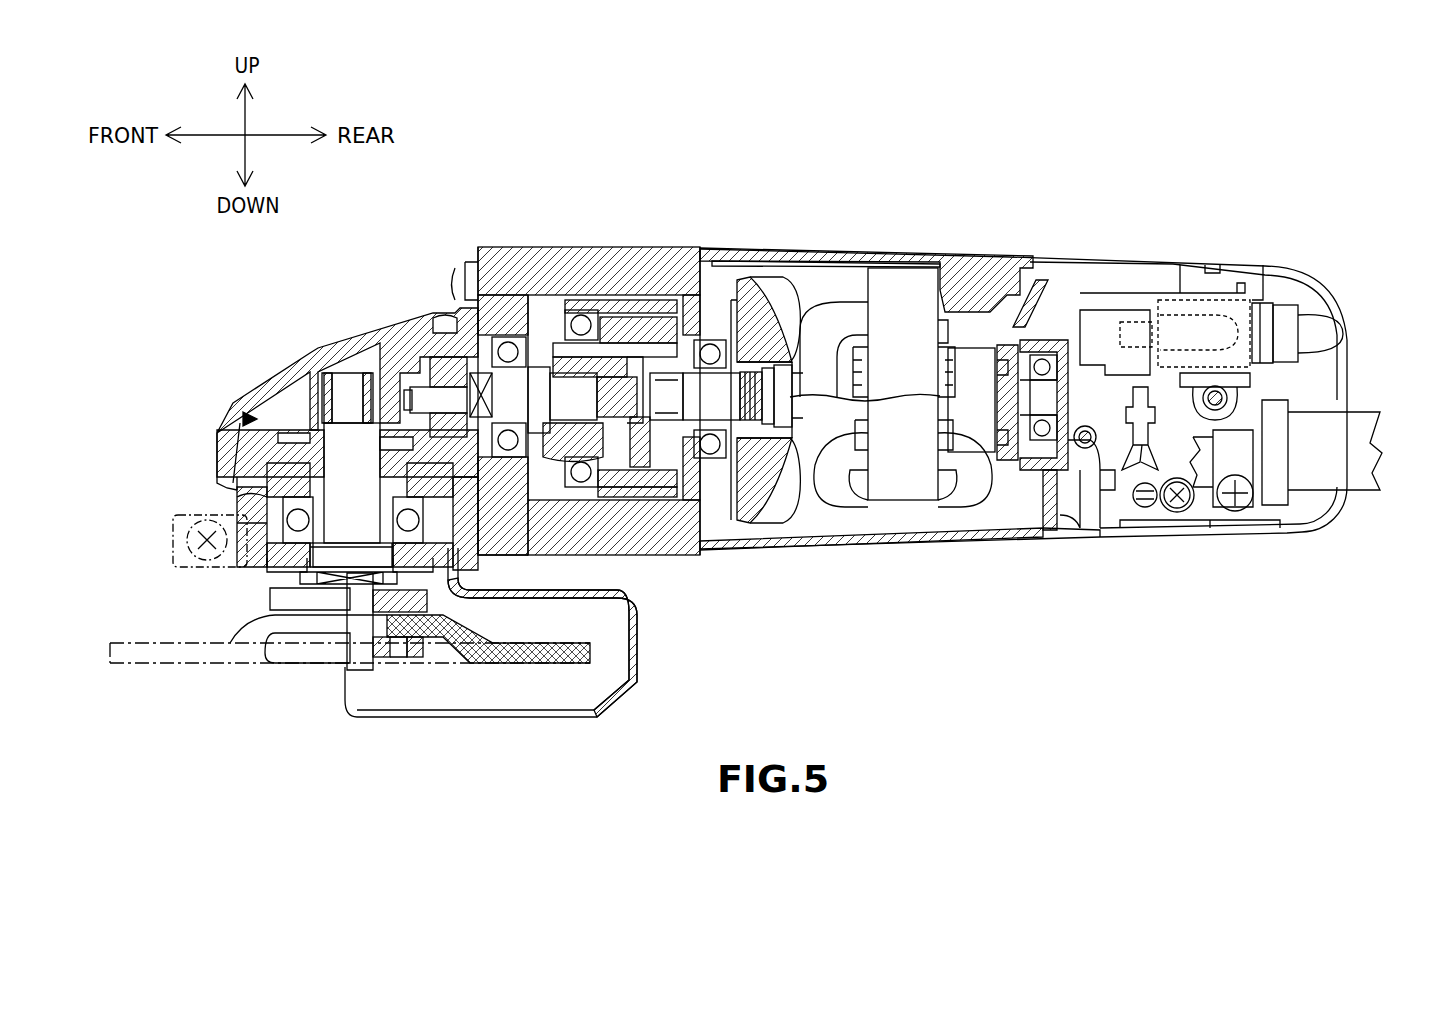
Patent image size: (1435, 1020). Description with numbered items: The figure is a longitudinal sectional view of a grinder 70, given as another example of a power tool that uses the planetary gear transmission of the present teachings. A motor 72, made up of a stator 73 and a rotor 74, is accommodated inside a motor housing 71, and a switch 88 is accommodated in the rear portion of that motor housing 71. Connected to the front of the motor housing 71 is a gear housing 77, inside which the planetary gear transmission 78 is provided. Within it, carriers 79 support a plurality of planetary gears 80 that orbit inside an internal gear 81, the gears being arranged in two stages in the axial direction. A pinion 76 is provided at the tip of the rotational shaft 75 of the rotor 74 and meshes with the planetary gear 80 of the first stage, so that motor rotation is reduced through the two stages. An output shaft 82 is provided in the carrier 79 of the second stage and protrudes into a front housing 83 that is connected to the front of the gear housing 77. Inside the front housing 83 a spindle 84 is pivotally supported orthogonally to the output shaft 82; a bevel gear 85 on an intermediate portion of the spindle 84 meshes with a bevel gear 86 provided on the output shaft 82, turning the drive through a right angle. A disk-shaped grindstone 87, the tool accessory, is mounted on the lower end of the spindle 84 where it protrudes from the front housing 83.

The grinder 70 is at (1052, 190).
The motor housing 71 is at (976, 280).
The motor 72 is at (830, 285).
The stator 73 is at (897, 290).
The rotor 74 is at (830, 430).
The rotational shaft 75 is at (712, 388).
The pinion 76 is at (665, 402).
The gear housing 77 is at (548, 255).
The planetary gear transmission 78 is at (627, 296).
The carriers 79 is at (560, 325).
The planetary gears 80 is at (609, 332).
The internal gear 81 is at (643, 488).
The output shaft 82 is at (507, 392).
The front housing 83 is at (387, 342).
The spindle 84 is at (337, 458).
The bevel gear 85 is at (262, 446).
The bevel gear 86 is at (443, 377).
The grindstone 87 is at (513, 652).
The switch 88 is at (1292, 318).